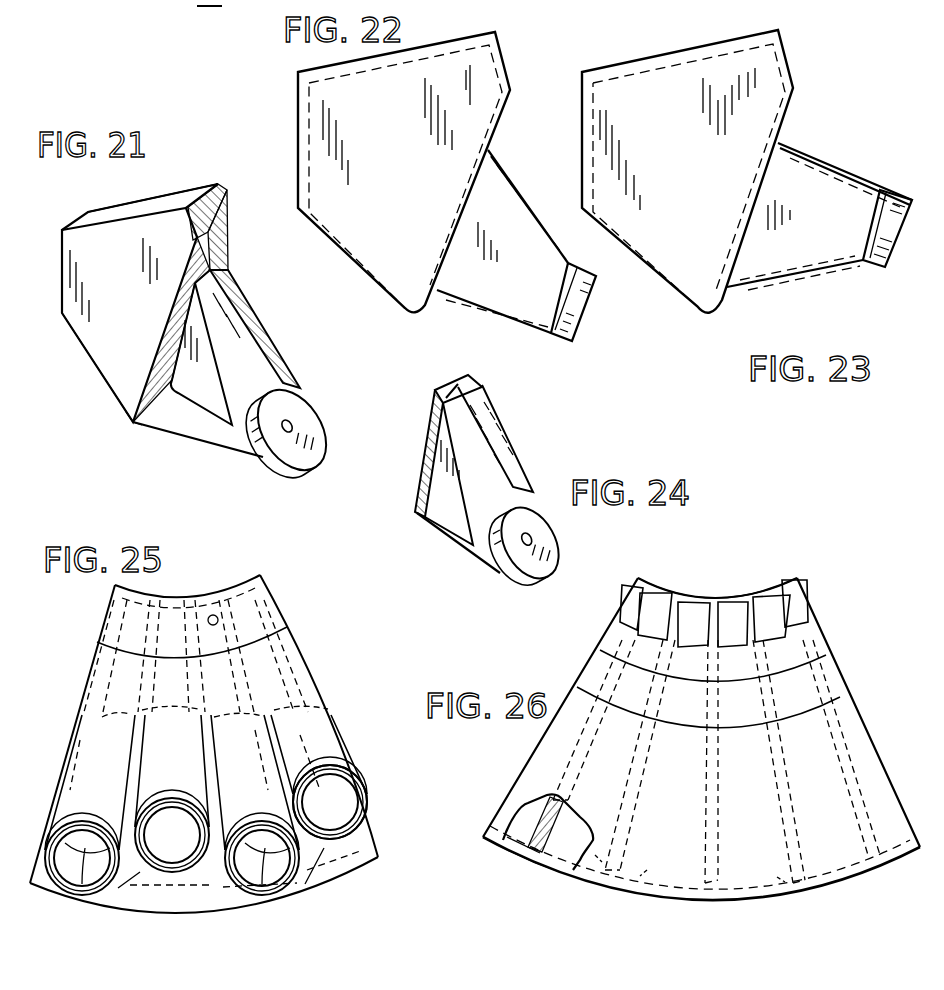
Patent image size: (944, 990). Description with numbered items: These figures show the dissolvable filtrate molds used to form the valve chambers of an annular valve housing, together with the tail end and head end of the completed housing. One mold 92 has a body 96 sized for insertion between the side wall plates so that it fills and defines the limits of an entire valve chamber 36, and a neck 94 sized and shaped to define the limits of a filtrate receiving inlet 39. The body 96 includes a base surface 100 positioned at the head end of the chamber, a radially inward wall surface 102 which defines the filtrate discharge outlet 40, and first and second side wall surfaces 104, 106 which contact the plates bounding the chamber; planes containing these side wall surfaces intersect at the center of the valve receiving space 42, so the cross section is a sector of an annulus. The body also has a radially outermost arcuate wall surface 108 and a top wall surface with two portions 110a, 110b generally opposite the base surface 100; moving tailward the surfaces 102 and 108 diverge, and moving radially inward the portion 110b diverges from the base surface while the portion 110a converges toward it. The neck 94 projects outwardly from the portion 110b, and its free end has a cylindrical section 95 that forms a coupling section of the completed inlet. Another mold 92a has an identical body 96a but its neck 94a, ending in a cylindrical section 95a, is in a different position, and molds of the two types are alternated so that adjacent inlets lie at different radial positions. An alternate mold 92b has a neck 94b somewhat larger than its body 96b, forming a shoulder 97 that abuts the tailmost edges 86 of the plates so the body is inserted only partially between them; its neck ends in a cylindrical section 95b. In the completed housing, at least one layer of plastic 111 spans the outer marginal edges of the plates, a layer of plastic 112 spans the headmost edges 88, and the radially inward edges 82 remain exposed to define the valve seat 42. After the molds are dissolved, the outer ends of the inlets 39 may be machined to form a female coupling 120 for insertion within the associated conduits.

In FIG. 21, the dissolvable filtrate mold 92 is at (193, 314).
In FIG. 22, the dissolvable filtrate mold 92 is at (447, 209).
In FIG. 21, the body 96 is at (127, 300).
In FIG. 22, the body 96 is at (401, 162).
In FIG. 21, the neck 94 is at (237, 362).
In FIG. 22, the neck 94 is at (507, 325).
In FIG. 21, the cylindrical section 95 is at (307, 392).
In FIG. 22, the cylindrical section 95 is at (558, 343).
In FIG. 21, the base surface 100 is at (60, 288).
In FIG. 21, the radially inward wall surface 102 is at (152, 198).
In FIG. 21, the first side wall surface 104 is at (105, 358).
In FIG. 21, the second side wall surface 106 is at (230, 248).
In FIG. 21, the radially outermost arcuate wall surface 108 is at (120, 420).
In FIG. 21, the top wall surface portion 110a is at (216, 196).
In FIG. 21, the top wall surface portion 110b is at (172, 405).
In FIG. 23, the dissolvable filtrate mold 92a is at (747, 182).
In FIG. 23, the body 96a is at (698, 162).
In FIG. 23, the neck 94a is at (797, 285).
In FIG. 23, the cylindrical section 95a is at (872, 268).
In FIG. 24, the dissolvable filtrate mold 92b is at (487, 503).
In FIG. 24, the body 96b is at (422, 473).
In FIG. 24, the shoulder 97 is at (418, 514).
In FIG. 24, the neck 94b is at (437, 538).
In FIG. 24, the cylindrical section 95b is at (480, 574).
In FIG. 25, the tailmost edge 86 is at (295, 662).
In FIG. 25, the valve chamber 36 is at (70, 890).
In FIG. 26, the valve chamber 36 is at (595, 855).
In FIG. 25, the filtrate receiving inlet 39 is at (148, 872).
In FIG. 25, the female coupling 120 is at (368, 799).
In FIG. 26, the valve receiving space or seat 42 is at (691, 727).
In FIG. 26, the filtrate discharge outlet 40 is at (700, 605).
In FIG. 26, the radially inward edge 82 is at (777, 592).
In FIG. 26, the headmost planar edge 88 is at (833, 720).
In FIG. 26, the layer of plastic 112 is at (483, 838).
In FIG. 26, the layer of plastic 111 is at (542, 864).